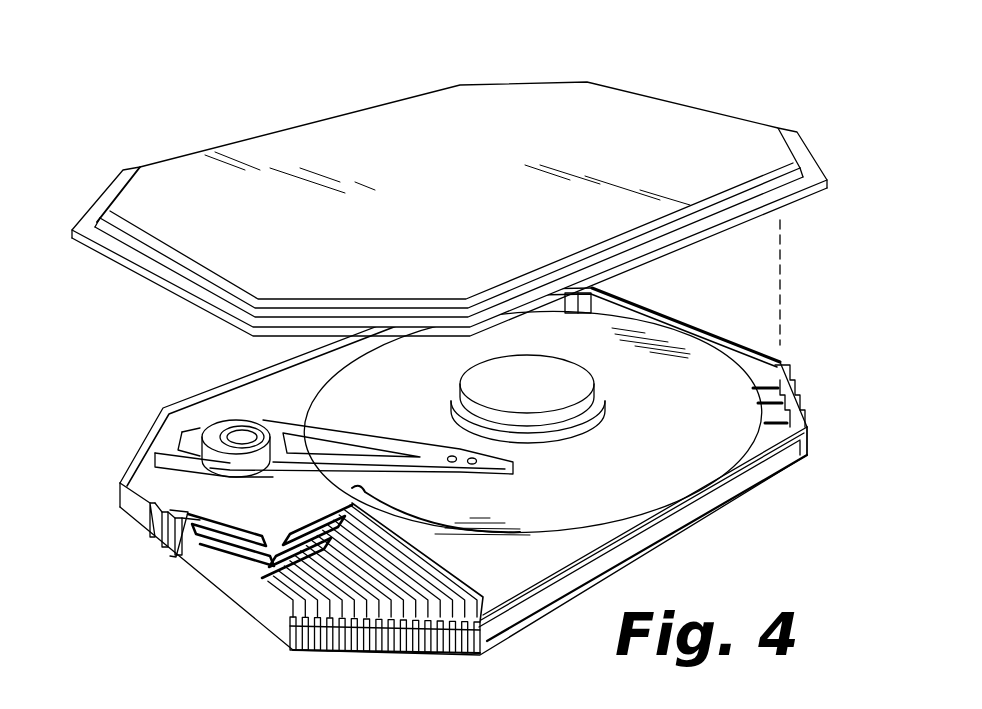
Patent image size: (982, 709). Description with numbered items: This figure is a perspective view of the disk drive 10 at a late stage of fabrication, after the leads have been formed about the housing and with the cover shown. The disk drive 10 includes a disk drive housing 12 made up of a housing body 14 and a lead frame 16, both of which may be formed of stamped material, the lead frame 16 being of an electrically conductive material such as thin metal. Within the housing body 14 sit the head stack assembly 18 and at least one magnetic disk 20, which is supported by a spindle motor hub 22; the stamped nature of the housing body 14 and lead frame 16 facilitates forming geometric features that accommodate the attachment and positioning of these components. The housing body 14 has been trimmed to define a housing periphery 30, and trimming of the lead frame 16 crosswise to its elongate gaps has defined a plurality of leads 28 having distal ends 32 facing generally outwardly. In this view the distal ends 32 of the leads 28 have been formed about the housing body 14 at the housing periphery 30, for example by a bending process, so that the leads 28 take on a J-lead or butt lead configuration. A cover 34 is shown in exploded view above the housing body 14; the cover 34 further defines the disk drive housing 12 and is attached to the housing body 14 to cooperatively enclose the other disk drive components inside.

The disk drive 10 is at (228, 107).
The disk drive housing 12 is at (93, 398).
The housing body 14 is at (143, 452).
The lead frame 16 is at (156, 422).
The head stack assembly 18 is at (270, 428).
The magnetic disk 20 is at (648, 463).
The spindle motor hub 22 is at (580, 394).
The leads 28 is at (790, 412).
The housing periphery 30 is at (786, 468).
The distal ends 32 is at (354, 635).
The cover 34 is at (468, 186).